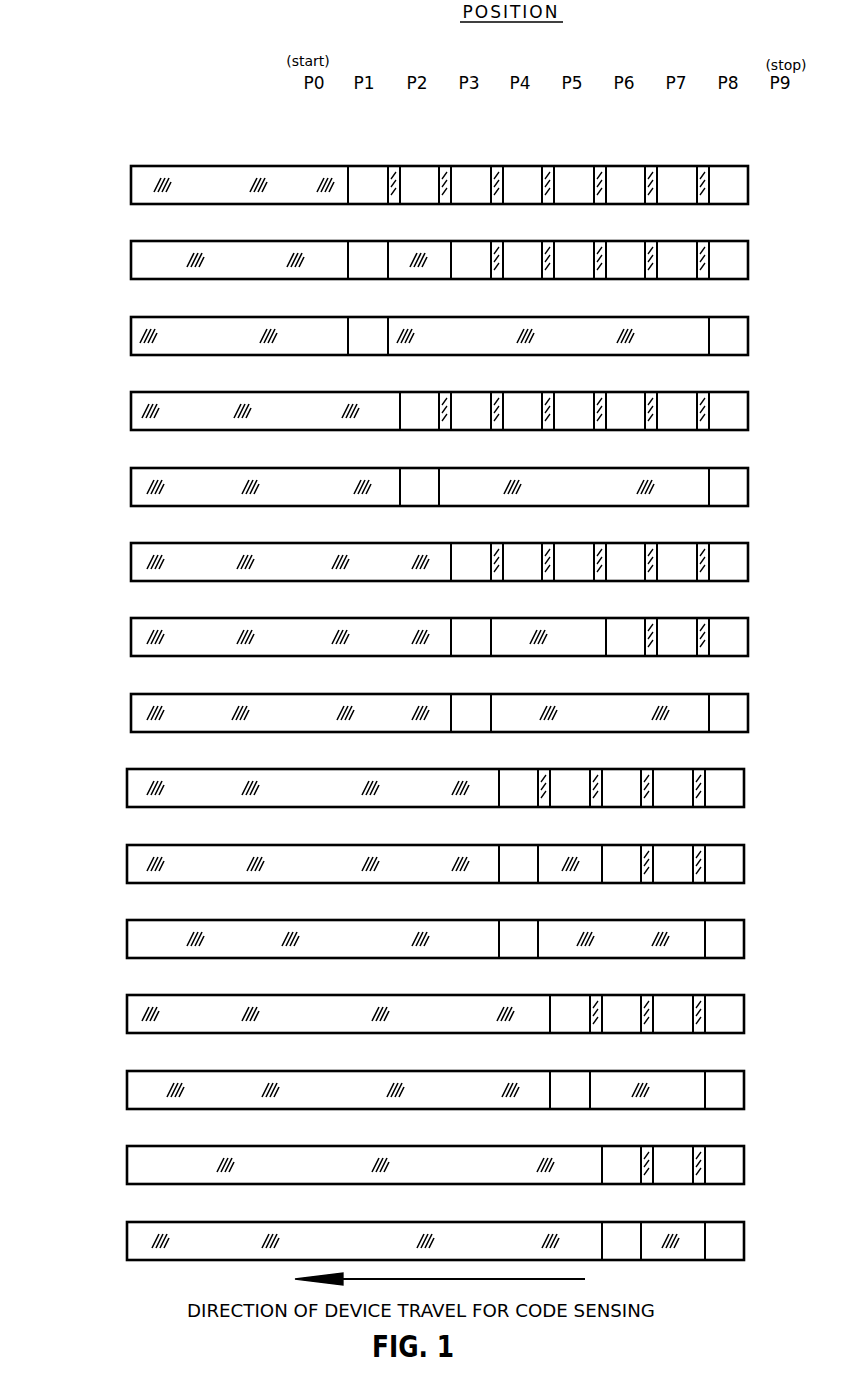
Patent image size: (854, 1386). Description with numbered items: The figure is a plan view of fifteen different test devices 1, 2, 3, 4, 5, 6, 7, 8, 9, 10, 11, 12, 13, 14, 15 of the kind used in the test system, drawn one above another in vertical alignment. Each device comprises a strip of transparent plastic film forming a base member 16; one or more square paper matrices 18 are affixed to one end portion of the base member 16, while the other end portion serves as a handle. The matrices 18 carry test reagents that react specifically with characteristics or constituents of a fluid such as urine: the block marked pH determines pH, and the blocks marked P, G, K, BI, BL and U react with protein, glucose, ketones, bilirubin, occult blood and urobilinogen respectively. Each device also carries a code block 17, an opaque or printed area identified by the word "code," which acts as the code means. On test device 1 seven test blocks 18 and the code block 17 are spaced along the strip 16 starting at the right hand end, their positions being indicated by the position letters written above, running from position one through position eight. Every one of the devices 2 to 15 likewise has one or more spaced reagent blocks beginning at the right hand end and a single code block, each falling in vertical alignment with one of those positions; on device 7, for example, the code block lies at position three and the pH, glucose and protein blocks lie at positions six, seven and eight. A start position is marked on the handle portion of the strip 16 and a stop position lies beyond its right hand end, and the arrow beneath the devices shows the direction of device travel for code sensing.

The test device 1 is at (399, 158).
The test device 2 is at (399, 260).
The test device 3 is at (399, 336).
The test device 4 is at (399, 411).
The test device 5 is at (399, 487).
The test device 6 is at (399, 562).
The test device 7 is at (399, 637).
The test device 8 is at (399, 713).
The test device 9 is at (397, 788).
The test device 10 is at (391, 864).
The test device 11 is at (391, 939).
The test device 12 is at (391, 1014).
The test device 13 is at (391, 1090).
The test device 14 is at (391, 1165).
The test device 15 is at (391, 1241).
The base member 16 is at (439, 158).
The code block 17 is at (346, 158).
The paper matrices 18 is at (563, 158).